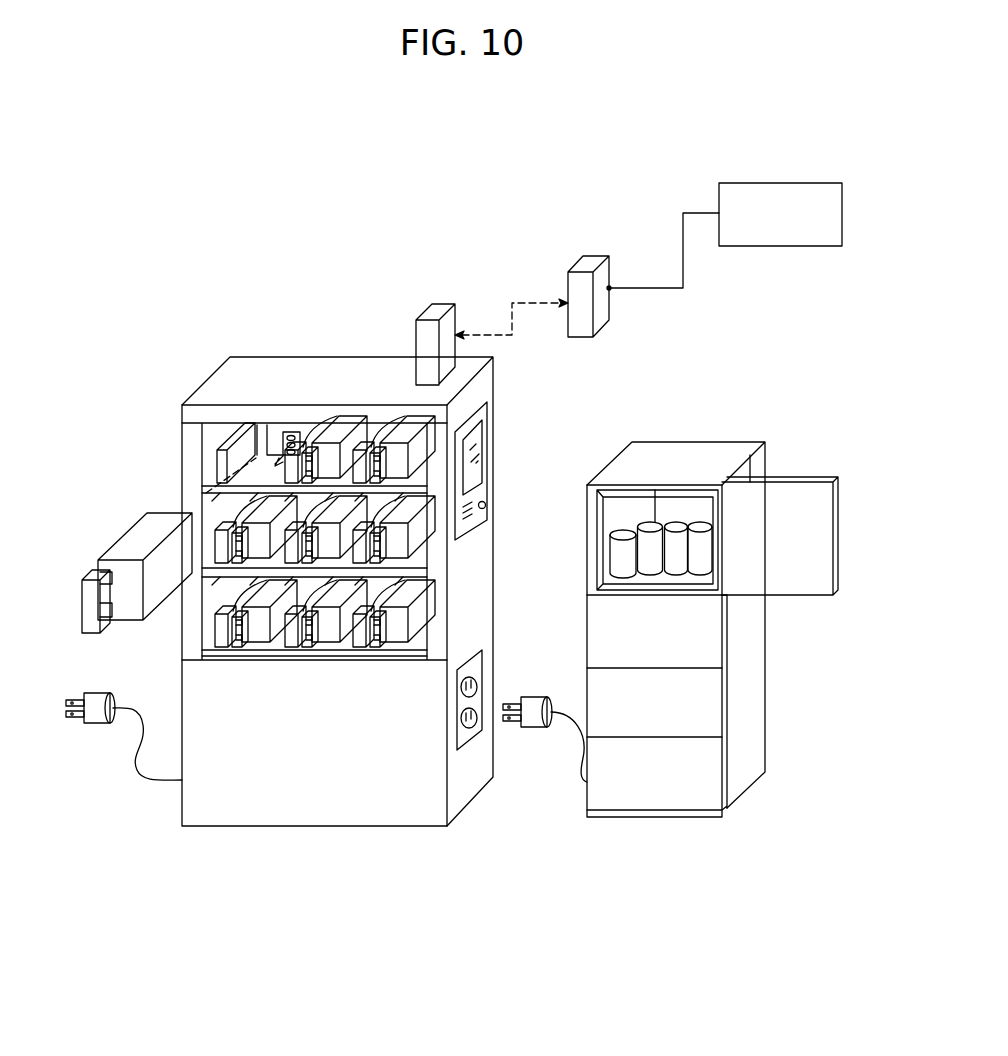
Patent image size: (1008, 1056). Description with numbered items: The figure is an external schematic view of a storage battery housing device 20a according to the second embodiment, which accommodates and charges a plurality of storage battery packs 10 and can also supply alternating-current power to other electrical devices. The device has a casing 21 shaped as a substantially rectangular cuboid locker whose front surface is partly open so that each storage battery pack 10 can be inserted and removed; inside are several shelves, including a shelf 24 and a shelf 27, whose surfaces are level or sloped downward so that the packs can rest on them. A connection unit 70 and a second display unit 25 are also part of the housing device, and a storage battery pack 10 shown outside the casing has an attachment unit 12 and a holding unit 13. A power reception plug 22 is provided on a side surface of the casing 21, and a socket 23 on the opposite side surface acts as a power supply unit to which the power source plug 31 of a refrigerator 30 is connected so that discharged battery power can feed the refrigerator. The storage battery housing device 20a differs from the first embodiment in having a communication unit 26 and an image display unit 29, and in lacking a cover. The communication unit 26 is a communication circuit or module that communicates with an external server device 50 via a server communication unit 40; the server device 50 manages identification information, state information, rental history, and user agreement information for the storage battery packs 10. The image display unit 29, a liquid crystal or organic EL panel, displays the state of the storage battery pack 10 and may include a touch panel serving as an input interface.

The storage battery pack 10 is at (130, 540).
The attachment unit 12 is at (192, 513).
The holding unit 13 is at (88, 602).
The storage battery housing device 20a is at (193, 333).
The casing 21 is at (485, 602).
The power reception plug 22 is at (93, 720).
The socket 23 is at (478, 730).
The shelf 24 is at (205, 492).
The second display unit 25 is at (215, 462).
The communication unit 26 is at (416, 340).
The shelf 27 is at (183, 665).
The image display unit 29 is at (488, 462).
The refrigerator 30 is at (748, 435).
The power source plug 31 is at (540, 700).
The server communication unit 40 is at (597, 322).
The server device 50 is at (842, 200).
The connection unit 70 is at (302, 432).